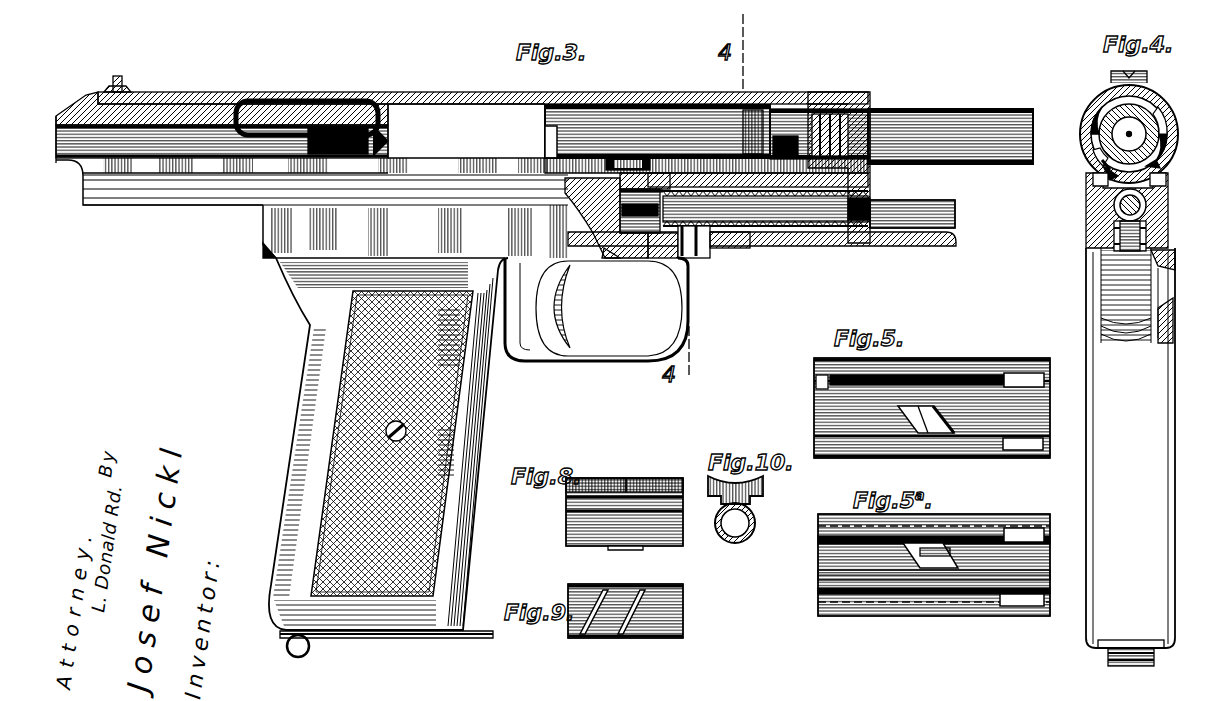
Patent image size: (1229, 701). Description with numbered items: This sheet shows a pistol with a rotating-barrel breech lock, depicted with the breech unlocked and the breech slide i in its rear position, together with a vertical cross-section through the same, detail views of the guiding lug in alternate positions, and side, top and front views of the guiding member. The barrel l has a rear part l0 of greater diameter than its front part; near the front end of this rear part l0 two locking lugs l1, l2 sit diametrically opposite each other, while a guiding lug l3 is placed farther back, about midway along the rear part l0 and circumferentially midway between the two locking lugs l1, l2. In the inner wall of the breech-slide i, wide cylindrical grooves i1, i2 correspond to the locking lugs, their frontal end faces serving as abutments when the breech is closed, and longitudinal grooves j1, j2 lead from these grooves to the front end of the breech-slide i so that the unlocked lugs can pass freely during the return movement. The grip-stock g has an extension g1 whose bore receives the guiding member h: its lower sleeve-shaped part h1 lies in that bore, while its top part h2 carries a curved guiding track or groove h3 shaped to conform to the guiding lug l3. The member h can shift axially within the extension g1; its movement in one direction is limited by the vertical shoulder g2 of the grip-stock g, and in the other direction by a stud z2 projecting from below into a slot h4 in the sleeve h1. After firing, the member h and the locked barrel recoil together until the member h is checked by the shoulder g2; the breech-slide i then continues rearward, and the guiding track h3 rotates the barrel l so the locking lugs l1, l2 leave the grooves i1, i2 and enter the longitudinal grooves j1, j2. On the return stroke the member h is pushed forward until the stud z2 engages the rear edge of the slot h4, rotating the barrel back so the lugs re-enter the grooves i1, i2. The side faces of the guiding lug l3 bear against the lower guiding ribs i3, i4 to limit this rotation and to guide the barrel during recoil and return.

In FIG. 3, the grip-stock g is at (325, 216).
In FIG. 4, the grip-stock g is at (1082, 214).
In FIG. 3, the extension of the grip-stock g1 is at (948, 206).
In FIG. 3, the vertical face or shoulder g2 is at (602, 252).
In FIG. 3, the guiding member h is at (742, 238).
In FIG. 4, the guiding member h is at (1160, 200).
In FIG. 8, the guiding member h is at (560, 510).
In FIG. 10, the guiding member h is at (735, 539).
In FIG. 10, the sleeve shaped part h1 is at (748, 512).
In FIG. 8, the top part of the guiding member h2 is at (660, 474).
In FIG. 9, the top part of the guiding member h2 is at (645, 630).
In FIG. 10, the top part of the guiding member h2 is at (752, 476).
In FIG. 3, the guiding track or groove h3 is at (620, 150).
In FIG. 8, the guiding track or groove h3 is at (582, 474).
In FIG. 9, the guiding track or groove h3 is at (582, 630).
In FIG. 3, the slot h4 is at (652, 250).
In FIG. 8, the slot h4 is at (618, 542).
In FIG. 3, the breech-slide i is at (776, 105).
In FIG. 4, the breech-slide i is at (1160, 98).
In FIG. 5, the breech-slide i is at (970, 362).
In FIG. 5A, the breech-slide i is at (990, 522).
In FIG. 4, the groove i1 is at (1084, 142).
In FIG. 4, the groove i2 is at (1163, 114).
In FIG. 3, the lower guiding rib i3 is at (537, 144).
In FIG. 4, the lower guiding rib i3 is at (1092, 160).
In FIG. 5A, the lower guiding rib i3 is at (915, 545).
In FIG. 4, the lower guiding rib i4 is at (1166, 159).
In FIG. 5, the lower guiding rib i4 is at (930, 428).
In FIG. 4, the longitudinal groove j1 is at (1076, 124).
In FIG. 3, the longitudinal groove j2 is at (814, 133).
In FIG. 4, the longitudinal groove j2 is at (1170, 128).
In FIG. 3, the barrel l is at (966, 103).
In FIG. 3, the rear part of the barrel l0 is at (657, 110).
In FIG. 5, the rear part of the barrel l0 is at (870, 378).
In FIG. 5A, the rear part of the barrel l0 is at (898, 565).
In FIG. 3, the locking lug l1 is at (742, 120).
In FIG. 4, the locking lug l1 is at (1082, 96).
In FIG. 5, the locking lug l1 is at (1010, 372).
In FIG. 5A, the locking lug l1 is at (1024, 524).
In FIG. 3, the locking lug l2 is at (777, 100).
In FIG. 4, the locking lug l2 is at (1166, 143).
In FIG. 5, the locking lug l2 is at (1015, 440).
In FIG. 5A, the locking lug l2 is at (1012, 598).
In FIG. 3, the guiding lug l3 is at (624, 250).
In FIG. 4, the guiding lug l3 is at (1086, 172).
In FIG. 5, the guiding lug l3 is at (912, 405).
In FIG. 5A, the guiding lug l3 is at (945, 550).
In FIG. 3, the stud z2 is at (702, 243).
In FIG. 4, the stud z2 is at (1168, 246).